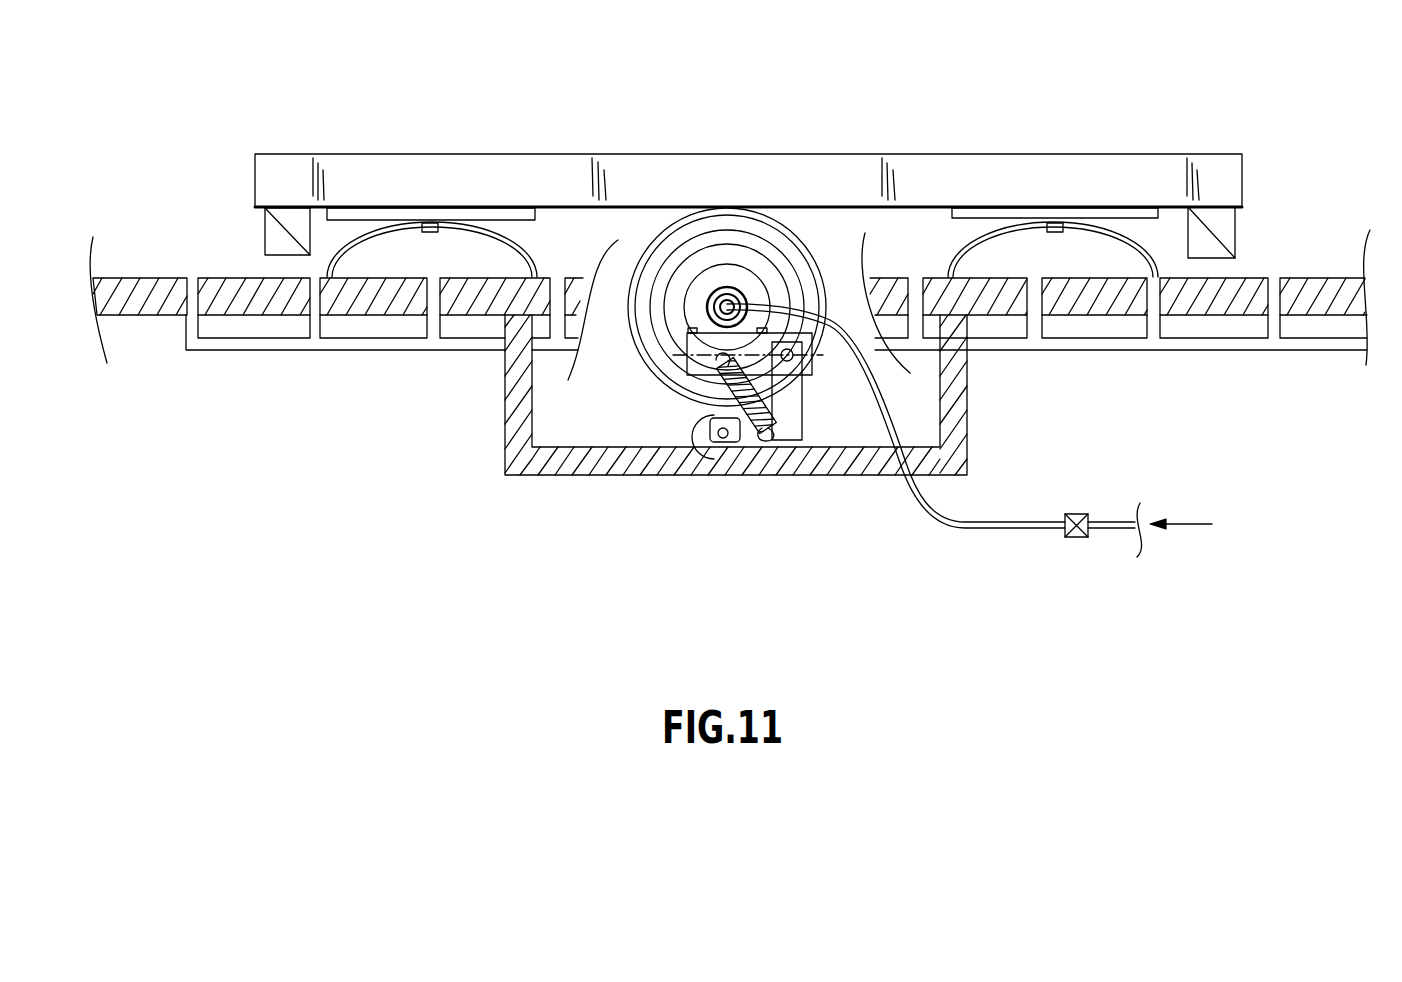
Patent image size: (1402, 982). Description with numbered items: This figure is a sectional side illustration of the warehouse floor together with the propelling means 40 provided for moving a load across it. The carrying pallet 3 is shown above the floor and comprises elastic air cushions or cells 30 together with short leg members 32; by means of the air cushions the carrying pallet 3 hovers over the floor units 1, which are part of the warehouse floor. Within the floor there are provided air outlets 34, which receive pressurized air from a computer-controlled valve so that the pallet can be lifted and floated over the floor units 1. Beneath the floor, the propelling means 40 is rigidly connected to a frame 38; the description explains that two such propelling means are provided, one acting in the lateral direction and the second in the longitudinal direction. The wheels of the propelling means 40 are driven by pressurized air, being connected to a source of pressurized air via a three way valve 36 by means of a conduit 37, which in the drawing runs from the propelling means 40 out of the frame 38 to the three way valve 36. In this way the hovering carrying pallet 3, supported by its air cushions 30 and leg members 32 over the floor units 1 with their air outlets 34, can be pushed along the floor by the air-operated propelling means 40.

The floor unit 1 is at (250, 302).
The carrying pallet 3 is at (743, 173).
The elastic air cushion 30 is at (490, 220).
The short leg member 32 is at (1218, 221).
The air outlet 34 is at (1210, 293).
The three way valve 36 is at (1087, 540).
The conduit 37 is at (963, 528).
The frame 38 is at (580, 462).
The propelling means 40 is at (670, 230).